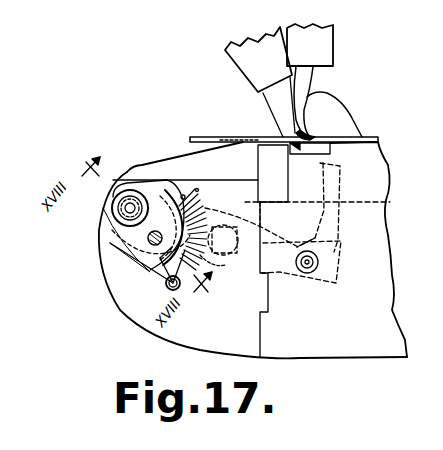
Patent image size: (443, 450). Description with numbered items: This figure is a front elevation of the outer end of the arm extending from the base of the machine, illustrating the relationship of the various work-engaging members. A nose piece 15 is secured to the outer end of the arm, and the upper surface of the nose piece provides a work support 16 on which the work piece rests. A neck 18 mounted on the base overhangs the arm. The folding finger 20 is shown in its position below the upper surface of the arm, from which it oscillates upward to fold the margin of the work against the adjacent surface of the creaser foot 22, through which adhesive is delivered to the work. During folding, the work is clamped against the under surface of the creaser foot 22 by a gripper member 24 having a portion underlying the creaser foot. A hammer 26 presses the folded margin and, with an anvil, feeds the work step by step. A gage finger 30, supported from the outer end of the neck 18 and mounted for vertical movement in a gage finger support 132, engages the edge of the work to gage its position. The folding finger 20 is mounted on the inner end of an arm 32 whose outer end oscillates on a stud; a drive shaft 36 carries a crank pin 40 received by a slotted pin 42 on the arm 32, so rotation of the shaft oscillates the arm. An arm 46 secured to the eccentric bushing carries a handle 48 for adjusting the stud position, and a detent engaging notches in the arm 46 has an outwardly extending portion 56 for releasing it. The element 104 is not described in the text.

The nose piece 15 is at (100, 277).
The work support 16 is at (158, 162).
The neck 18 is at (438, 94).
The folding finger 20 is at (340, 182).
The creaser foot 22 is at (277, 117).
The gripper member 24 is at (268, 164).
The hammer 26 is at (333, 98).
The gage finger 30 is at (313, 83).
The arm 32 is at (271, 273).
The drive shaft 36 is at (352, 255).
The crank pin 40 is at (252, 219).
The slotted pin 42 is at (220, 258).
The arm 46 is at (133, 255).
The handle 48 is at (168, 287).
The outwardly extending portion 56 is at (157, 268).
The block 104 is at (233, 70).
The gage finger support 132 is at (332, 37).